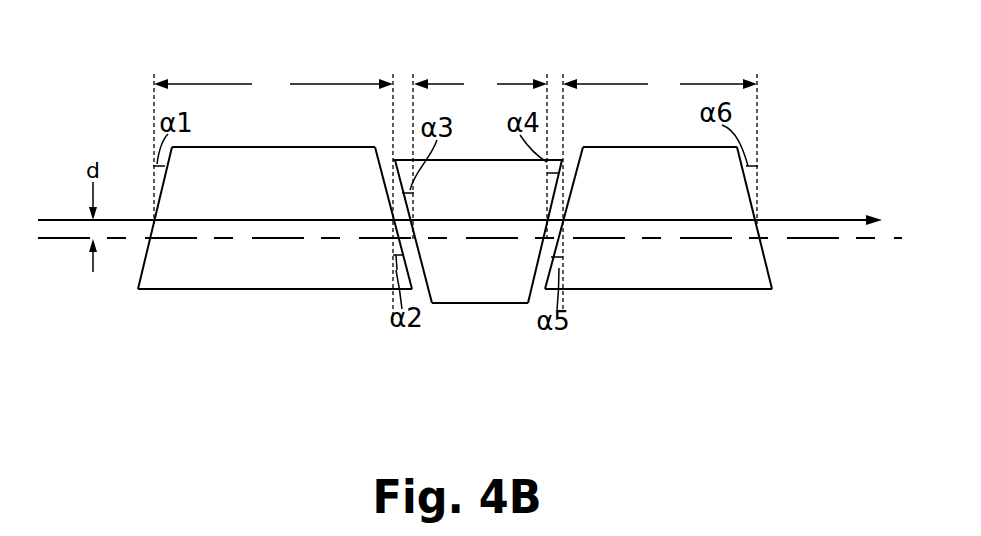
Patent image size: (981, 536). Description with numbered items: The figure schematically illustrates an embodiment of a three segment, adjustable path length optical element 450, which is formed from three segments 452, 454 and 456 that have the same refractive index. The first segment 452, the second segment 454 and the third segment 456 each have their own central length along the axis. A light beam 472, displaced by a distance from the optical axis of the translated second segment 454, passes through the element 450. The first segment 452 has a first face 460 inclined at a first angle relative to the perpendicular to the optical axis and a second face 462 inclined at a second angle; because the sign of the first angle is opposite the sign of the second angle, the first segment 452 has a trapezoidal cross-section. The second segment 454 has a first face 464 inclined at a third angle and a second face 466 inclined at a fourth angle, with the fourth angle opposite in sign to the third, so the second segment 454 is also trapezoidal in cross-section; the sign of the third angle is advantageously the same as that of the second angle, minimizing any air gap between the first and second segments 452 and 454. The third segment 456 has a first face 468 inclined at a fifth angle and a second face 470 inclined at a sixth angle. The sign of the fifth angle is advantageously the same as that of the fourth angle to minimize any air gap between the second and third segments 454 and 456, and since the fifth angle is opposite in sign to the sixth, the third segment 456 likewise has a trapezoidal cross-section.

The three segment optical element 450 is at (818, 78).
The first segment 452 is at (198, 292).
The second segment 454 is at (473, 305).
The third segment 456 is at (690, 293).
The first face 460 is at (140, 273).
The second face 462 is at (372, 167).
The first face 464 is at (435, 293).
The second face 466 is at (527, 292).
The first face 468 is at (582, 165).
The second face 470 is at (770, 272).
The light beam 472 is at (822, 217).